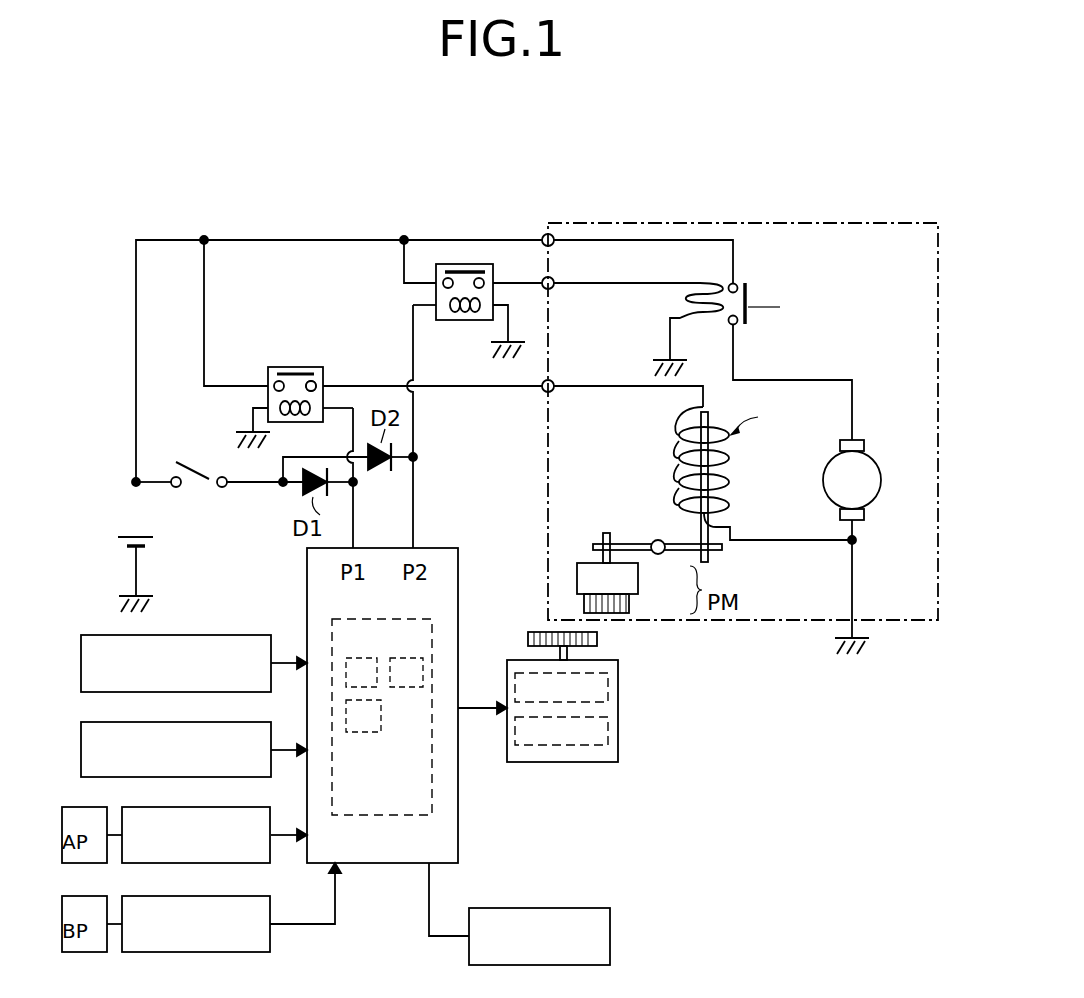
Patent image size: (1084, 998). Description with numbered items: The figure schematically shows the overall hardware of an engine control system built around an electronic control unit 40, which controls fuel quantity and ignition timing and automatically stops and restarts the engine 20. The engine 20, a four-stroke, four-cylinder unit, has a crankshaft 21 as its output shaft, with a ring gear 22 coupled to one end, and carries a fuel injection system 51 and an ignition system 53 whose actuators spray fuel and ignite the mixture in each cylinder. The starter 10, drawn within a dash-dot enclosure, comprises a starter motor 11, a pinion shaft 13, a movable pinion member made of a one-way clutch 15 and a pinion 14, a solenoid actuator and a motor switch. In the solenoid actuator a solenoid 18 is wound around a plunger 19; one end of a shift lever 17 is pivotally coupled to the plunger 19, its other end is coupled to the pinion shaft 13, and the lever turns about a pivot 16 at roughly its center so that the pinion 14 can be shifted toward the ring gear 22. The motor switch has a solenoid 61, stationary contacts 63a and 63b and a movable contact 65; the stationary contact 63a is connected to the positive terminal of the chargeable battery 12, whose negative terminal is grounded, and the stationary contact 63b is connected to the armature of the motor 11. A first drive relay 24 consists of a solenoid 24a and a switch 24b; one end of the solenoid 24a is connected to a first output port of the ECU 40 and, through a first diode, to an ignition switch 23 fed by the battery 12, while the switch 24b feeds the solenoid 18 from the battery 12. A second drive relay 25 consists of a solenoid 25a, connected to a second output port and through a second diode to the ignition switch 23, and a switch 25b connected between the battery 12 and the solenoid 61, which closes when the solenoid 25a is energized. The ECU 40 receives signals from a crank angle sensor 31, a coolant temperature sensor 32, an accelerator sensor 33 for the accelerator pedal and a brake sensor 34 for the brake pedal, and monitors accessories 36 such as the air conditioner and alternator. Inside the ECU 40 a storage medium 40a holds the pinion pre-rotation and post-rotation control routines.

The starter 10 is at (889, 219).
The starter motor 11 is at (881, 480).
The chargeable battery 12 is at (125, 537).
The pinion shaft 13 is at (600, 562).
The pinion 14 is at (629, 605).
The one-way clutch 15 is at (638, 572).
The pivot 16 is at (658, 540).
The shift lever 17 is at (632, 544).
The solenoid 18 is at (728, 458).
The plunger 19 is at (710, 512).
The internal combustion engine 20 is at (618, 730).
The crankshaft 21 is at (568, 650).
The ring gear 22 is at (528, 638).
The ignition switch 23 is at (200, 463).
The first drive relay 24 is at (296, 367).
The solenoid 24a is at (273, 403).
The switch 24b is at (316, 370).
The second drive relay 25 is at (457, 322).
The solenoid 25a is at (474, 273).
The switch 25b is at (448, 300).
The crank angle sensor 31 is at (240, 635).
The coolant temperature sensor 32 is at (238, 722).
The accelerator sensor 33 is at (236, 807).
The brake sensor 34 is at (236, 896).
The accessories 36 is at (588, 908).
The electronic control unit 40 is at (378, 864).
The storage medium 40a is at (433, 618).
The fuel injection system 51 is at (608, 690).
The ignition system 53 is at (600, 746).
The solenoid 61 is at (713, 290).
The stationary contact 63a is at (738, 284).
The stationary contact 63b is at (738, 325).
The movable contact 65 is at (770, 282).